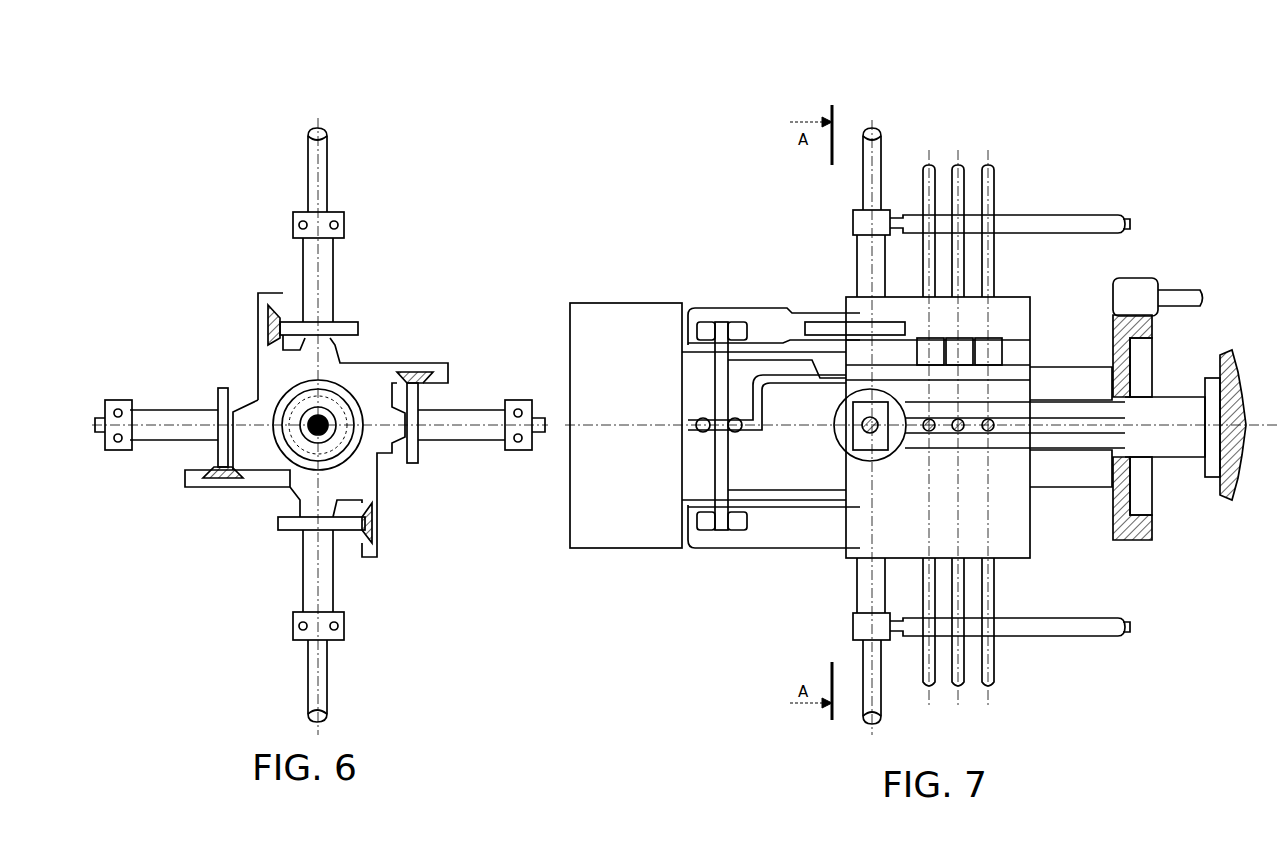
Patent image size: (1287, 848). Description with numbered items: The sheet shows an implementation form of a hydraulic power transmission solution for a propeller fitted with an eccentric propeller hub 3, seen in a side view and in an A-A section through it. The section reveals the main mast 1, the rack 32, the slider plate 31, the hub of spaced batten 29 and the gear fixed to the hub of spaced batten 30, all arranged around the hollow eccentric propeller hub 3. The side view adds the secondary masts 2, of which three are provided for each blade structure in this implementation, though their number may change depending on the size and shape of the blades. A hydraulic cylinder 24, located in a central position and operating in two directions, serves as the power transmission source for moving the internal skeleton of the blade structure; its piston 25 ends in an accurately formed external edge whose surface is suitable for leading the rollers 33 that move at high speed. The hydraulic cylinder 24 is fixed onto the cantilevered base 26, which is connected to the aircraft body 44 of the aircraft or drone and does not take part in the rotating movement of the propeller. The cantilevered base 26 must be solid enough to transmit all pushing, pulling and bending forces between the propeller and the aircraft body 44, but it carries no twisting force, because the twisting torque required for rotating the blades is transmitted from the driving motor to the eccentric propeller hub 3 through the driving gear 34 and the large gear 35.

In FIG. 6, the main mast 1 is at (325, 132).
In FIG. 7, the main mast 1 is at (882, 133).
In FIG. 7, the secondary masts 2 is at (990, 168).
In FIG. 6, the eccentric propeller hub 3 is at (265, 362).
In FIG. 7, the eccentric propeller hub 3 is at (843, 557).
In FIG. 7, the hydraulic cylinder 24 is at (577, 303).
In FIG. 7, the piston 25 is at (700, 352).
In FIG. 7, the cantilevered base 26 is at (1165, 432).
In FIG. 6, the hub of spaced batten 29 is at (332, 273).
In FIG. 7, the hub of spaced batten 29 is at (857, 252).
In FIG. 6, the gear fixed to the hub of spaced batten 30 is at (358, 325).
In FIG. 6, the slider plate 31 is at (283, 310).
In FIG. 7, the slider plate 31 is at (722, 320).
In FIG. 6, the rack 32 is at (298, 300).
In FIG. 7, the rack 32 is at (800, 312).
In FIG. 7, the rollers 33 is at (683, 530).
In FIG. 7, the driving gear 34 is at (1158, 283).
In FIG. 7, the gear 35 is at (1150, 540).
In FIG. 7, the aircraft body 44 is at (1226, 358).